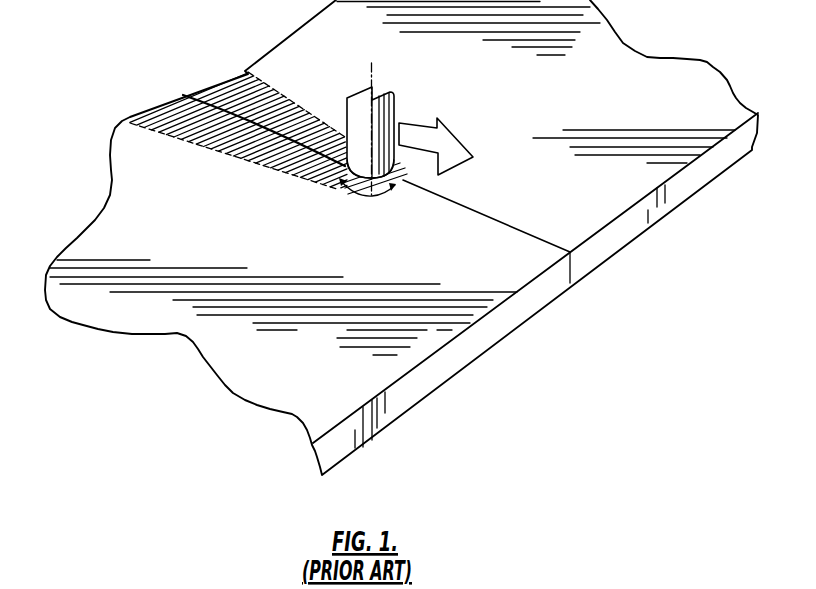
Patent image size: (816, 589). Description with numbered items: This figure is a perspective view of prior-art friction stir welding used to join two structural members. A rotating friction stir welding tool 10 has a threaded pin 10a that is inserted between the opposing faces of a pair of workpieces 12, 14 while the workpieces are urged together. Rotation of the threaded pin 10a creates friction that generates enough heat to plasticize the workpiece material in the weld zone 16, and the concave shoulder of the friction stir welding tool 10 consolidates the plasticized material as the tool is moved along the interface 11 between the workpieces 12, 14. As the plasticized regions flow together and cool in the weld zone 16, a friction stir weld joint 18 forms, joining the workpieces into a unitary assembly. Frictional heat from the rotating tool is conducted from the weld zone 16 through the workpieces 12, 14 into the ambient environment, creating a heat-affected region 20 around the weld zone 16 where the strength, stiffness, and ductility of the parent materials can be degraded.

The friction stir welding tool 10 is at (380, 195).
The threaded pin 10a is at (371, 192).
The interface 11 is at (482, 214).
The workpiece 12 is at (530, 267).
The workpiece 14 is at (606, 200).
The weld zone 16 is at (352, 183).
The friction stir weld joint 18 is at (267, 127).
The heat-affected region 20 is at (202, 138).